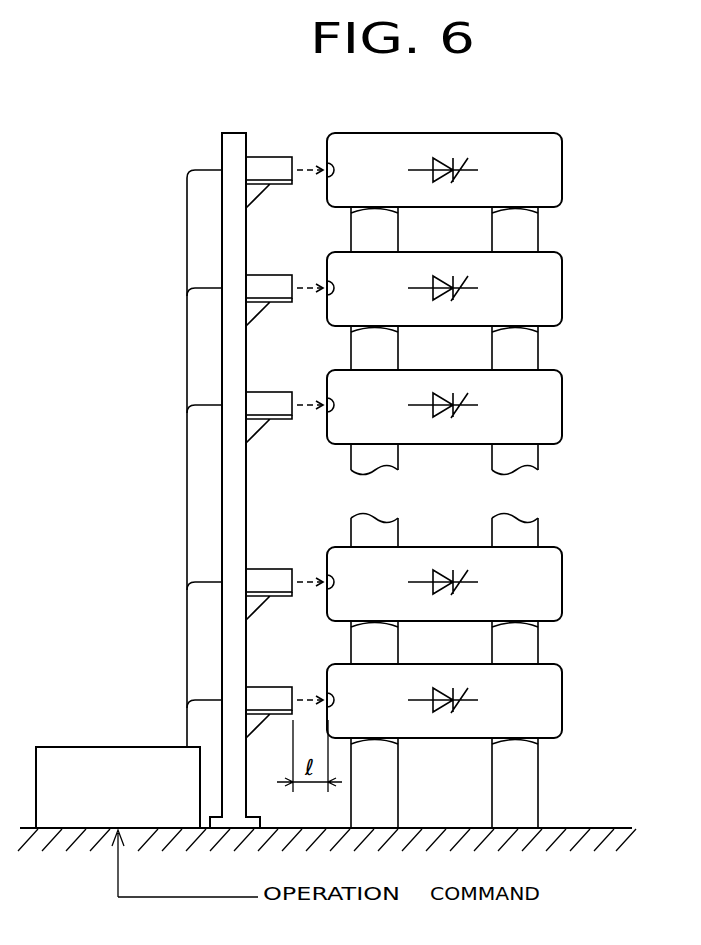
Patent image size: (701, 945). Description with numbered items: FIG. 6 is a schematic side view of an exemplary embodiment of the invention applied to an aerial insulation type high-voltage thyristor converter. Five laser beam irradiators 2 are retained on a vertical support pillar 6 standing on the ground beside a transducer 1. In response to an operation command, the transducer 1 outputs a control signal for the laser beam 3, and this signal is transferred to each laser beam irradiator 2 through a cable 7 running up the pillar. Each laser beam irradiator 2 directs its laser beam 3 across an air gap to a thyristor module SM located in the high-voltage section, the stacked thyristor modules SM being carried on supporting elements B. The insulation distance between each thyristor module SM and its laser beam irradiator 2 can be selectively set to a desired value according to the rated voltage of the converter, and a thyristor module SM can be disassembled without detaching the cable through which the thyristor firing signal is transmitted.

The transducer 1 is at (97, 747).
The laser beam irradiator 2 is at (277, 163).
The laser beam 3 is at (307, 177).
The support pillar 6 is at (232, 133).
The cable 7 is at (184, 523).
The thyristor module SM is at (582, 700).
The bushing / support leg B is at (557, 772).